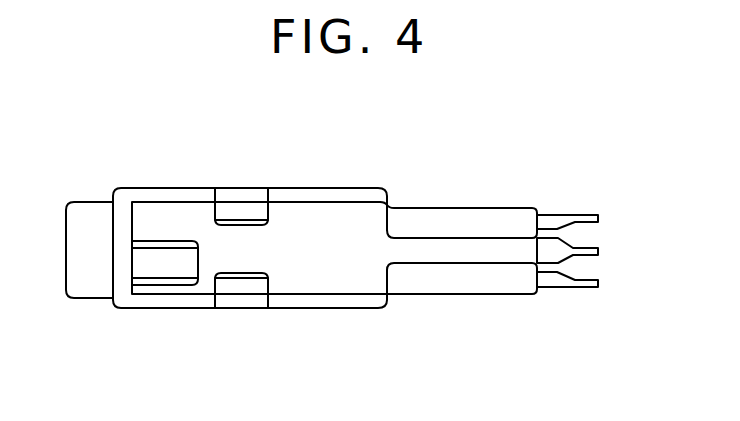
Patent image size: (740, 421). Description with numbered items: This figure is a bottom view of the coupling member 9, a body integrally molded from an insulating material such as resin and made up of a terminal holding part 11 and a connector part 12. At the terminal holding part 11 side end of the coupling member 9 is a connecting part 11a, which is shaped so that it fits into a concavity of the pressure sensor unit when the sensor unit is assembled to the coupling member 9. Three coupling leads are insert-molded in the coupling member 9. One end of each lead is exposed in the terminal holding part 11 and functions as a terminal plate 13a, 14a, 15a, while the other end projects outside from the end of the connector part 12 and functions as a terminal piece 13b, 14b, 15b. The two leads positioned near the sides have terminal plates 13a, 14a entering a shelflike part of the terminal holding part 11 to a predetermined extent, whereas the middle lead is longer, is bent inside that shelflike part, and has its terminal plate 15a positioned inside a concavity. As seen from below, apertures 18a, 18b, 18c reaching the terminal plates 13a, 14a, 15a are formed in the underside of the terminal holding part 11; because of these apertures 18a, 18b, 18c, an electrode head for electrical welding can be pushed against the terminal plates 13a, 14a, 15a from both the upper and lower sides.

The coupling member 9 is at (339, 158).
The terminal holding part 11 is at (141, 187).
The connecting part 11a is at (90, 297).
The connector part 12 is at (440, 207).
The terminal plate 13a is at (241, 290).
The terminal piece 13b is at (588, 288).
The terminal plate 14a is at (237, 207).
The terminal piece 14b is at (590, 215).
The terminal plate 15a is at (155, 272).
The terminal piece 15b is at (593, 247).
The aperture 18a is at (261, 292).
The aperture 18b is at (267, 214).
The aperture 18c is at (192, 268).